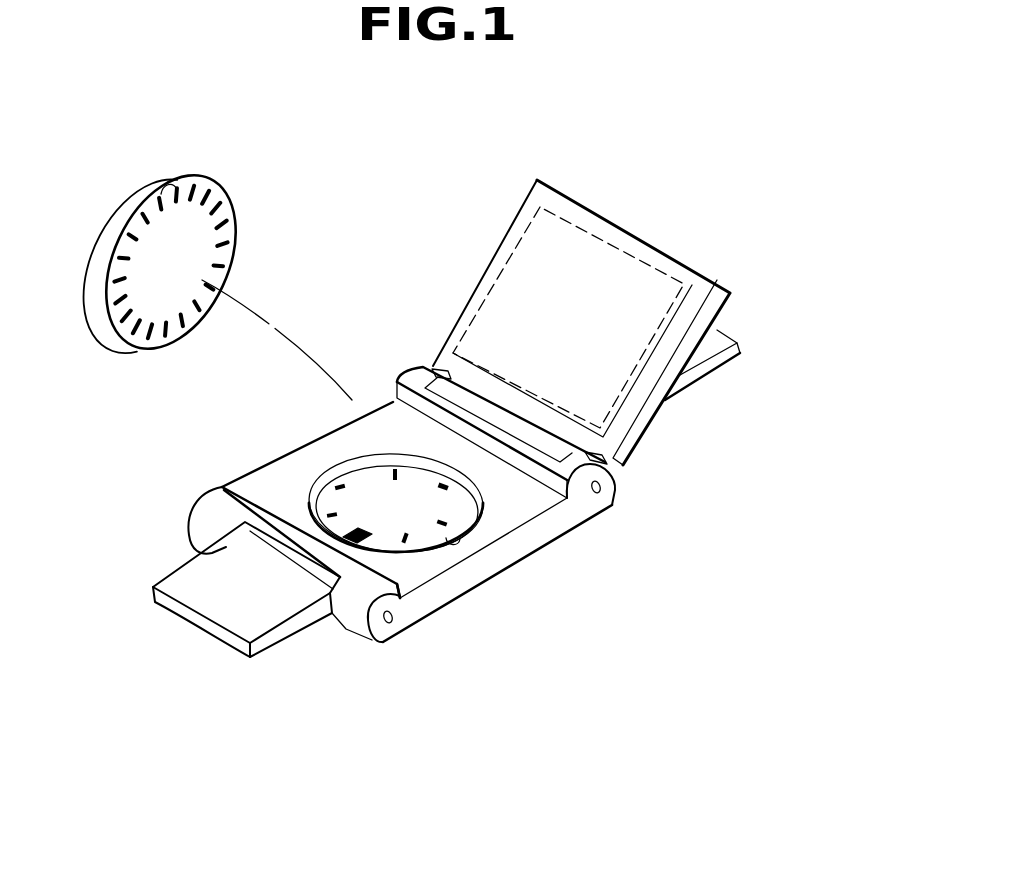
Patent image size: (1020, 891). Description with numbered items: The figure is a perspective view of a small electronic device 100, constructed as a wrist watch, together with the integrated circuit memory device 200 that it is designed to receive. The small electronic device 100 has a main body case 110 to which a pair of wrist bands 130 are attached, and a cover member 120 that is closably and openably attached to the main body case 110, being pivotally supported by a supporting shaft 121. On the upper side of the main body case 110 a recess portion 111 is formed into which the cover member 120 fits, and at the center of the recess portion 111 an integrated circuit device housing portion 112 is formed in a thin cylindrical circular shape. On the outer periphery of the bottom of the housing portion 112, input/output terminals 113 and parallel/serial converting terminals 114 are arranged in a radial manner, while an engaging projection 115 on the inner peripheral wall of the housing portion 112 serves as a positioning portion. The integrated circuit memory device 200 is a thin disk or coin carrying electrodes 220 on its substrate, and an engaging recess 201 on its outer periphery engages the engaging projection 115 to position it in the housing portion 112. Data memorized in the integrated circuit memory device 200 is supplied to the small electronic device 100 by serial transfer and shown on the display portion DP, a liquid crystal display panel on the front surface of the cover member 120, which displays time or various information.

The small electronic device 100 is at (470, 450).
The main body case 110 is at (513, 553).
The recess portion 111 is at (417, 577).
The integrated circuit device housing portion 112 is at (341, 468).
The input/output terminals 113 is at (441, 485).
The parallel/serial converting terminals 114 is at (353, 531).
The engaging projection 115 is at (453, 540).
The cover member 120 is at (585, 327).
The supporting shaft 121 is at (600, 490).
The wrist bands 130 is at (273, 660).
The integrated circuit memory device 200 is at (216, 252).
The engaging recess 201 is at (168, 190).
The electrodes 220 is at (222, 237).
The display portion DP is at (580, 224).